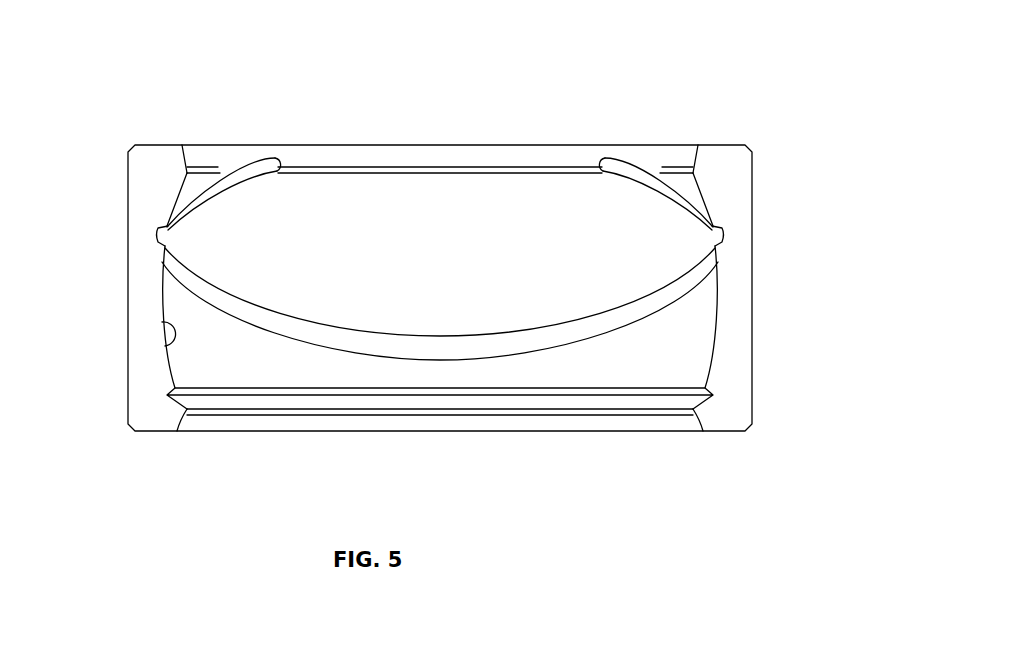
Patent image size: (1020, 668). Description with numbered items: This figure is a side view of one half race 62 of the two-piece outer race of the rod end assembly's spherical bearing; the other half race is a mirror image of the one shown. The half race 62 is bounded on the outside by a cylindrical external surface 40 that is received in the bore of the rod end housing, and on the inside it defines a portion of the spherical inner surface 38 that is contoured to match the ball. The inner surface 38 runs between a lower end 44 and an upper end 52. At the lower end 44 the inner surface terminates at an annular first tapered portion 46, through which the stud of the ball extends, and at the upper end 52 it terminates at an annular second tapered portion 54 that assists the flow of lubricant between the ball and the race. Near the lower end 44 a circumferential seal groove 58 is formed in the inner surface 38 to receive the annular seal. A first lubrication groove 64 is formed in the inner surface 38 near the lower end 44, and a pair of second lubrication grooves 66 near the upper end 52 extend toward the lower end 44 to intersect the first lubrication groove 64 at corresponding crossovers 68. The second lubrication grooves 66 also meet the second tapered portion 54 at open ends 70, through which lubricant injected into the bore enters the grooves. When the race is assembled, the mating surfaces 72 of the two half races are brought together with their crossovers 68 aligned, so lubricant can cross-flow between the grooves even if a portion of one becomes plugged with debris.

The spherical inner surface 38 is at (162, 324).
The cylindrical external surface 40 is at (127, 177).
The lower end 44 is at (617, 431).
The first tapered portion 46 is at (693, 431).
The upper end 52 is at (358, 145).
The second tapered portion 54 is at (186, 165).
The seal groove 58 is at (204, 400).
The half race 62 is at (742, 107).
The first lubrication groove 64 is at (353, 343).
The second lubrication grooves 66 is at (232, 173).
The crossovers 68 is at (157, 232).
The open ends 70 is at (273, 163).
The mating surfaces 72 is at (150, 370).